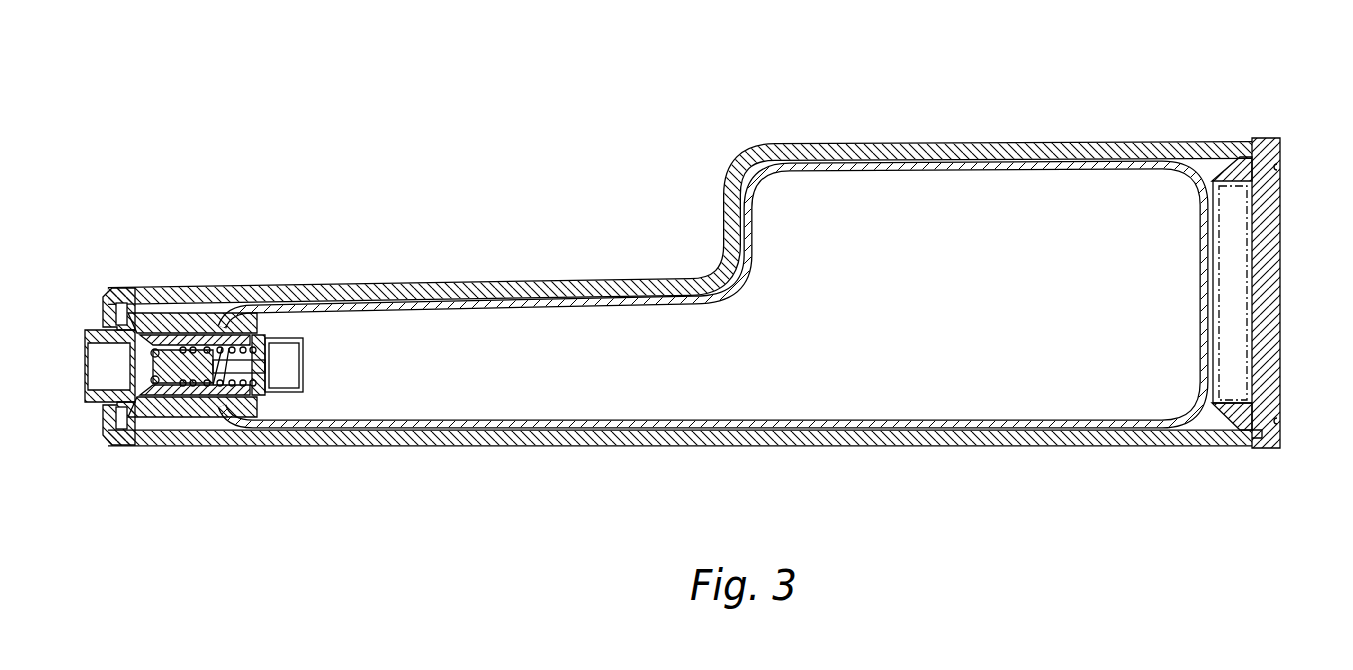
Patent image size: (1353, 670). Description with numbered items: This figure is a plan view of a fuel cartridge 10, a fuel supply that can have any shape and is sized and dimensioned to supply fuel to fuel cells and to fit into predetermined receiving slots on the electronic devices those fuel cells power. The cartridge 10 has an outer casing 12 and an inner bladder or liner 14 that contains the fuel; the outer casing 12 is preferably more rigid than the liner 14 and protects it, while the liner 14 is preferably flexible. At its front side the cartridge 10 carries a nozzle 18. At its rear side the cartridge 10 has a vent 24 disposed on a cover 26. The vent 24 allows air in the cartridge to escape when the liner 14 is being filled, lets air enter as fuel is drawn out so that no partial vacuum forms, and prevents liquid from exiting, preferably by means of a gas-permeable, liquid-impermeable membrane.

The fuel cartridge 10 is at (572, 234).
The outer casing 12 is at (840, 142).
The inner liner 14 is at (997, 190).
The nozzle 18 is at (96, 419).
The vent 24 is at (1282, 310).
The cover 26 is at (1265, 449).